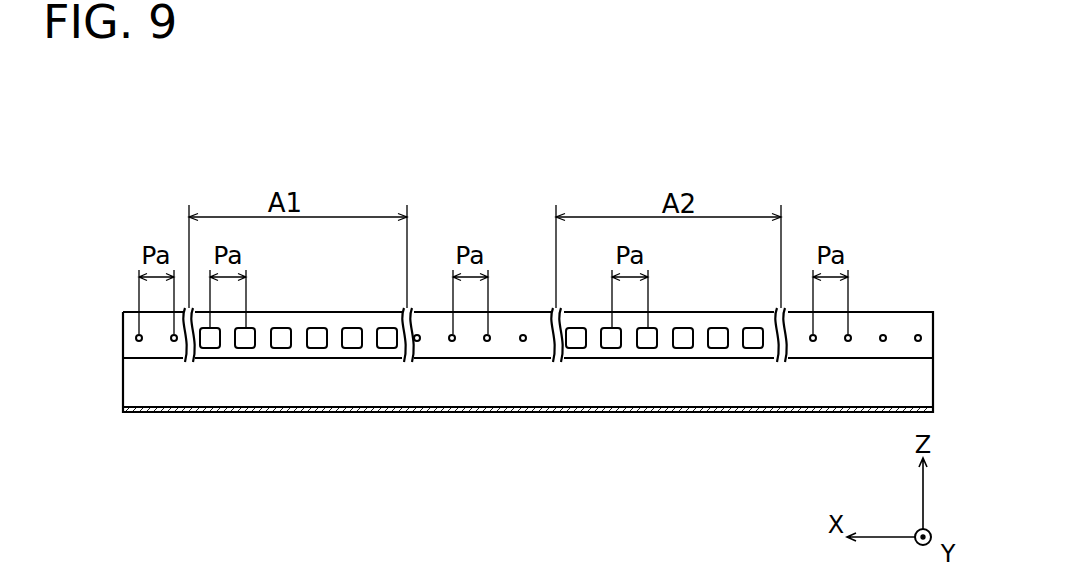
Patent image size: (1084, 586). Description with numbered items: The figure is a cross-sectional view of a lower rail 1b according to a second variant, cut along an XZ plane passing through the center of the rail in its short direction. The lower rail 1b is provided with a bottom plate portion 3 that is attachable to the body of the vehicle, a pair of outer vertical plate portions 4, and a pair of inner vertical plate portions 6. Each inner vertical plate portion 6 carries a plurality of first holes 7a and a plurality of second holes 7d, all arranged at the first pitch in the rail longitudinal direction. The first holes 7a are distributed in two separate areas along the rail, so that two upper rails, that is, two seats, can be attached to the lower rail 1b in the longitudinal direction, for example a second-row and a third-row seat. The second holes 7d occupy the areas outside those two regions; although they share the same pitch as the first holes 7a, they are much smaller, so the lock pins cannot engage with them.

The lower rail 1b is at (150, 193).
The bottom plate portion 3 is at (485, 410).
The outer vertical plate portion 4 is at (450, 393).
The inner vertical plate portion 6 is at (425, 352).
The first hole 7a is at (317, 333).
The second hole 7d is at (886, 334).